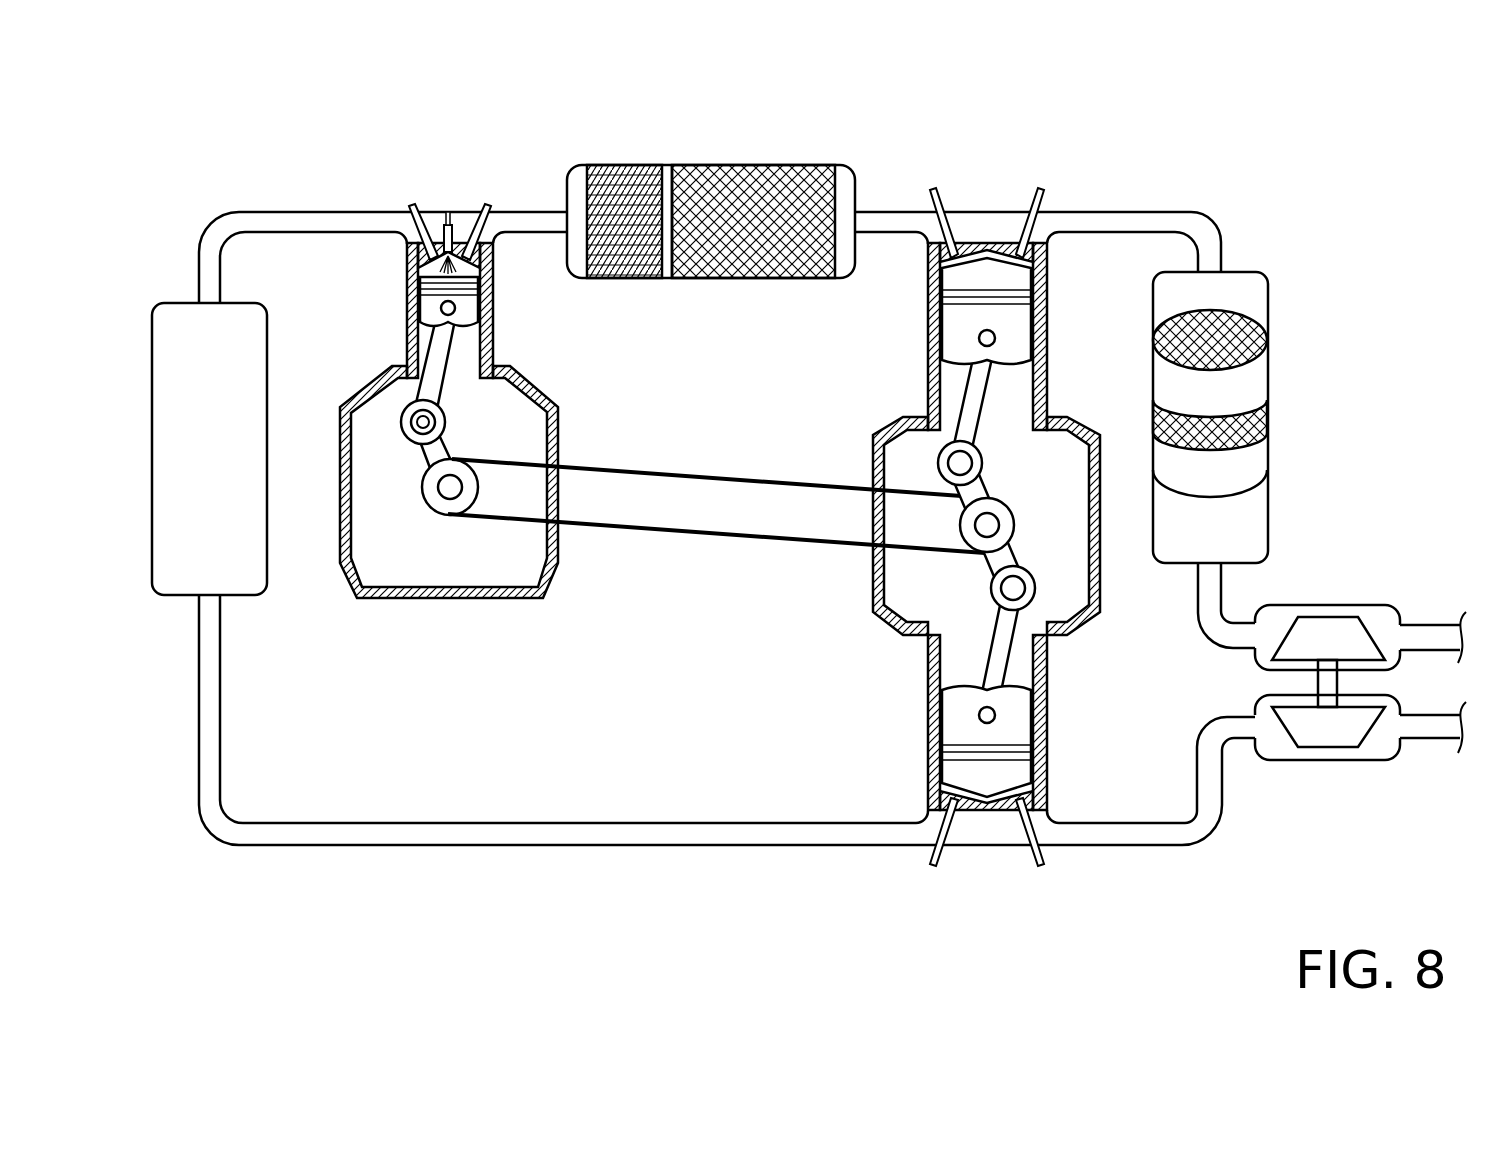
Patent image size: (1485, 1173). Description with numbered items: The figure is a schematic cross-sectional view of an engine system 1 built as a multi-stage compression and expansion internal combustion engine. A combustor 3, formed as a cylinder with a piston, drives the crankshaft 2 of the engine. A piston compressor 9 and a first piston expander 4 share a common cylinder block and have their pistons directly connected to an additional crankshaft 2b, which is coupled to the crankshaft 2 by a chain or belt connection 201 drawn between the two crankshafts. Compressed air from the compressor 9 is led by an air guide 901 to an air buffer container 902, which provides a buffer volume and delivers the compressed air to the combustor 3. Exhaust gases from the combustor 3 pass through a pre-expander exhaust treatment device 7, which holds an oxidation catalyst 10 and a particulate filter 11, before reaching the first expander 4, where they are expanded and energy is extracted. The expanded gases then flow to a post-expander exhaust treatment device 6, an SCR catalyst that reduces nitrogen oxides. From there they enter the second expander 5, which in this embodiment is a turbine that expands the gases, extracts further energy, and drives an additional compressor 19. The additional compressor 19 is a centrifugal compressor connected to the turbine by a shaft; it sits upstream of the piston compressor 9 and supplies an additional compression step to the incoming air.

The engine system 1 is at (182, 142).
The air buffer container 902 is at (178, 302).
The air guide 901 is at (575, 822).
The combustor 3 is at (405, 285).
The crankshaft 2 is at (437, 497).
The chain or belt connection 201 is at (718, 476).
The additional crankshaft 2b is at (978, 530).
The first piston expander 4 is at (928, 330).
The piston compressor 9 is at (928, 742).
The pre-expander exhaust treatment device 7 is at (822, 165).
The oxidation catalyst 10 is at (620, 175).
The particulate filter 11 is at (745, 188).
The post-expander exhaust treatment device 6 is at (1268, 370).
The second expander 5 is at (1330, 617).
The additional compressor 19 is at (1325, 748).